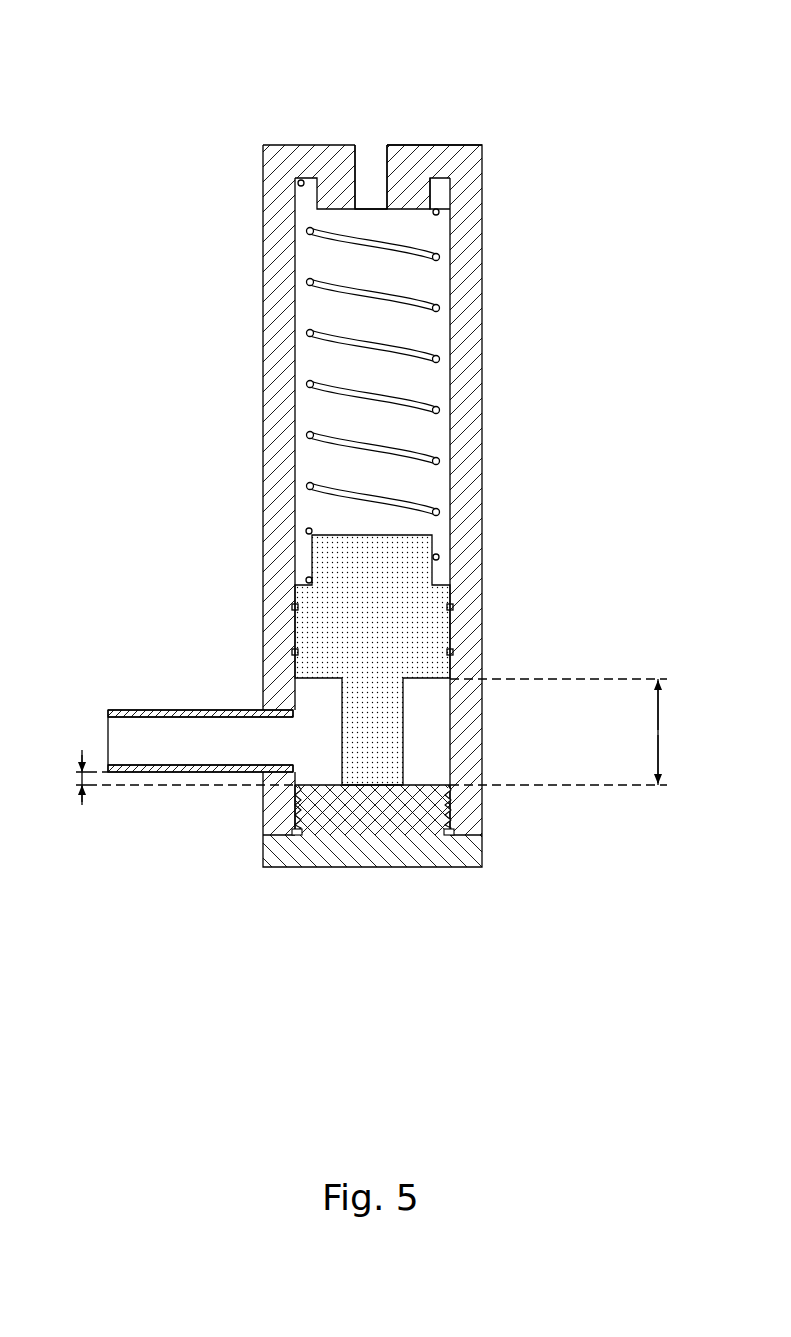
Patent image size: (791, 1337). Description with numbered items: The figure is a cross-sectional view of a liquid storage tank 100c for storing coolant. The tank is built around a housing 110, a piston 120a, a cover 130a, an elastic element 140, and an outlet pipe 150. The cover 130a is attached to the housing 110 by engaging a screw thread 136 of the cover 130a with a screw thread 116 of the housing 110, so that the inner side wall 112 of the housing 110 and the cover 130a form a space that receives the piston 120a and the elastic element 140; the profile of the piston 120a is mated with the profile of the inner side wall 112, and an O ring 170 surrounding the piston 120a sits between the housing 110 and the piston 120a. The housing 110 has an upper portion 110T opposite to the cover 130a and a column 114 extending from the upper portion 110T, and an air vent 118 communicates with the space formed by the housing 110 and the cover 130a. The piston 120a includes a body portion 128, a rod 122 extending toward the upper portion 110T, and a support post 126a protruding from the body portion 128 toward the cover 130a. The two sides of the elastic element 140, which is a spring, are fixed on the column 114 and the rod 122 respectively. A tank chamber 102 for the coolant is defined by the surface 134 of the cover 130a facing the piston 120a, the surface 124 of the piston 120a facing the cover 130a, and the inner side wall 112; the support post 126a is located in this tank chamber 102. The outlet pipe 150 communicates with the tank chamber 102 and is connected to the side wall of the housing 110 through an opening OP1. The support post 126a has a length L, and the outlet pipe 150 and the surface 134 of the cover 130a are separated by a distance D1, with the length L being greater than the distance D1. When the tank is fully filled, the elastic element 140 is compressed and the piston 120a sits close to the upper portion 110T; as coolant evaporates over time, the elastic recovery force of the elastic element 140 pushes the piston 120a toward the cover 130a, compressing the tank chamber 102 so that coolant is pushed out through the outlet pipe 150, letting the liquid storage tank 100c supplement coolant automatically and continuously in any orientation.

The liquid storage tank 100c is at (142, 43).
The housing 110 is at (273, 368).
The upper portion 110T is at (436, 143).
The inner side wall 112 is at (452, 375).
The column 114 is at (410, 192).
The screw thread 116 is at (447, 812).
The air vent 118 is at (372, 158).
The piston 120a is at (185, 607).
The rod 122 is at (390, 535).
The surface 124 is at (418, 683).
The support post 126a is at (345, 715).
The body portion 128 is at (312, 627).
The cover 130a is at (370, 850).
The surface 134 is at (448, 797).
The screw thread 136 is at (447, 822).
The elastic element 140 is at (413, 245).
The outlet pipe 150 is at (165, 772).
The O ring 170 is at (452, 607).
The tank chamber 102 is at (413, 775).
The opening OP1 is at (300, 740).
The distance D1 is at (166, 777).
The length L is at (564, 732).